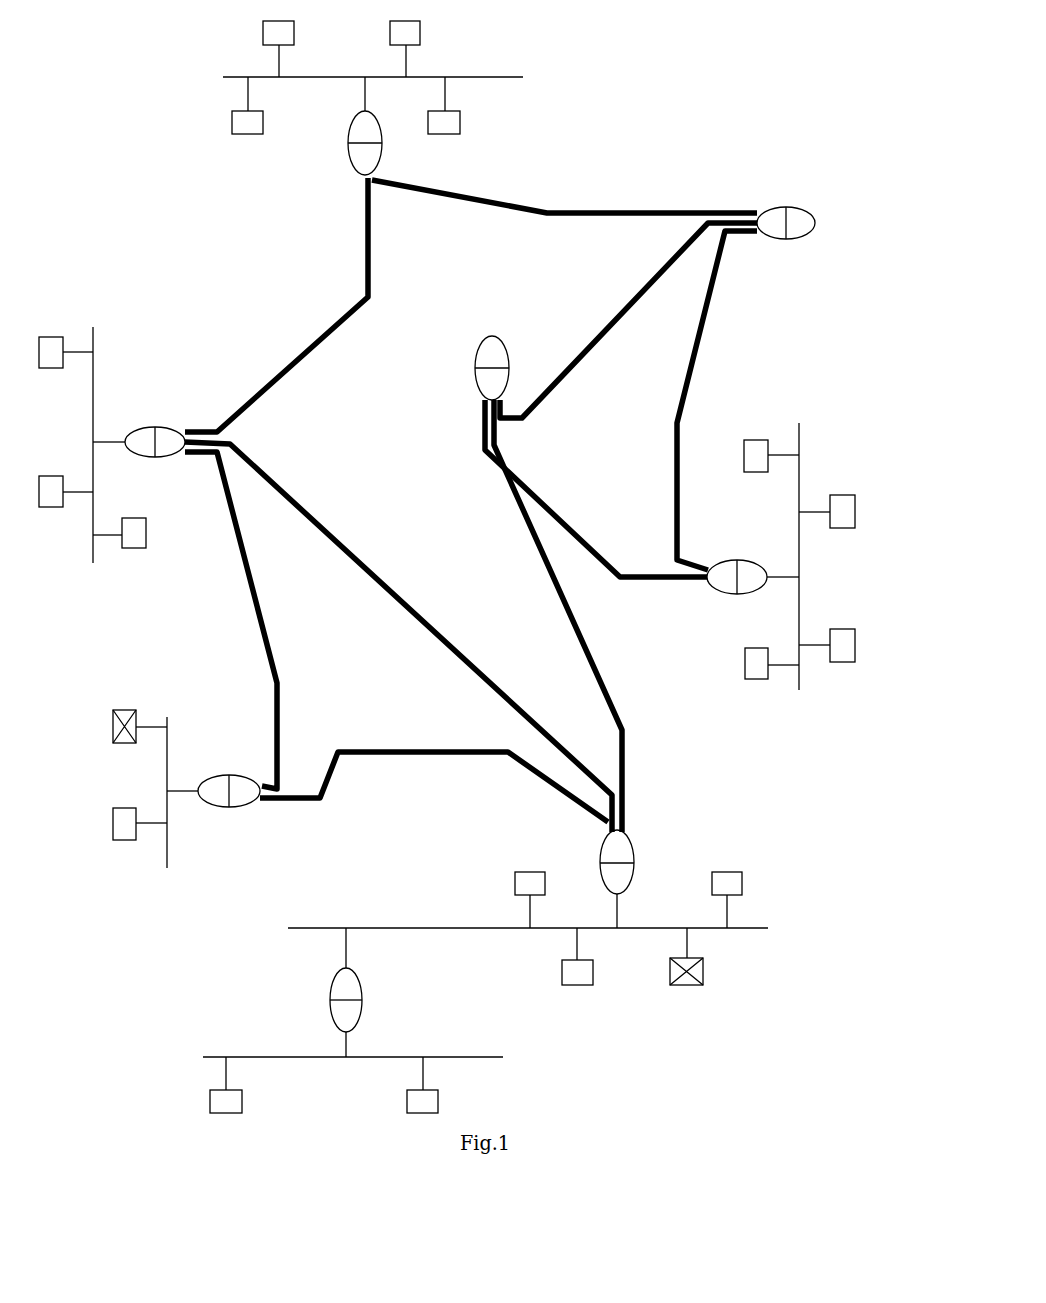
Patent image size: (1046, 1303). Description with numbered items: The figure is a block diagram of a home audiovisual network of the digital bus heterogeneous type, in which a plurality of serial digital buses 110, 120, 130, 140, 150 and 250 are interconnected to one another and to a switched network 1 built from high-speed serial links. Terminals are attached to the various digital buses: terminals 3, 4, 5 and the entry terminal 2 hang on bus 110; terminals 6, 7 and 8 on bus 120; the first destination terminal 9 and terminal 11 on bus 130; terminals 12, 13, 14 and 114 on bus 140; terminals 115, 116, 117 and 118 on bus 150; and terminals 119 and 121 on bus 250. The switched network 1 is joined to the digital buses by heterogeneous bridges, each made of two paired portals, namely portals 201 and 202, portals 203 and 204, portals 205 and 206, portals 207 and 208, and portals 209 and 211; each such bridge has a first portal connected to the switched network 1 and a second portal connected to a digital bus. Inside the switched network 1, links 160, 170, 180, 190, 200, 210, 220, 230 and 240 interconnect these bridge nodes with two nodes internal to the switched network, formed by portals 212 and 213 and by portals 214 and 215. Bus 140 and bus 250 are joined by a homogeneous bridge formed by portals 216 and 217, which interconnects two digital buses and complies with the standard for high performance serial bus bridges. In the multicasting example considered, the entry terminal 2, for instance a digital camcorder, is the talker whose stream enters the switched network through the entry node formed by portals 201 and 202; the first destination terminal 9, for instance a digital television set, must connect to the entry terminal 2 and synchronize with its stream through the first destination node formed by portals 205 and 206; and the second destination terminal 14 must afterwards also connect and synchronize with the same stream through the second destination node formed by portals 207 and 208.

The switched network 1 is at (639, 141).
The entry terminal 2 is at (232, 118).
The terminal 3 is at (262, 30).
The terminal 4 is at (421, 32).
The terminal 5 is at (461, 119).
The terminal 6 is at (49, 368).
The terminal 7 is at (49, 507).
The terminal 8 is at (133, 548).
The first destination terminal 9 is at (125, 743).
The terminal 11 is at (125, 840).
The terminal 12 is at (513, 878).
The terminal 13 is at (577, 985).
The second destination terminal 14 is at (687, 985).
The IEEE 1394 type bus 110 is at (503, 77).
The terminal 114 is at (743, 878).
The terminal 115 is at (755, 679).
The terminal 116 is at (840, 662).
The terminal 117 is at (843, 495).
The terminal 118 is at (752, 440).
The terminal 119 is at (209, 1097).
The IEEE 1394 type bus 120 is at (94, 331).
The terminal 121 is at (439, 1097).
The IEEE 1394 type bus 130 is at (168, 862).
The IEEE 1394 type bus 140 is at (472, 928).
The IEEE 1394 type bus 150 is at (800, 427).
The link 160 is at (370, 290).
The link 170 is at (546, 212).
The link 180 is at (318, 513).
The link 190 is at (345, 752).
The link 200 is at (259, 597).
The link 210 is at (575, 623).
The link 220 is at (530, 479).
The link 230 is at (677, 415).
The link 240 is at (600, 344).
The IEEE 1394 type bus 250 is at (503, 1056).
The portal 201 is at (350, 125).
The portal 202 is at (383, 148).
The portal 203 is at (165, 458).
The portal 204 is at (143, 427).
The portal 205 is at (213, 777).
The portal 206 is at (245, 807).
The portal 207 is at (598, 838).
The portal 208 is at (630, 880).
The portal 209 is at (730, 594).
The portal 211 is at (745, 560).
The internal node 212 is at (475, 350).
The internal node 213 is at (475, 380).
The internal node 214 is at (767, 207).
The internal node 215 is at (816, 220).
The homogeneous bridge portal 216 is at (330, 976).
The homogeneous bridge portal 217 is at (357, 1022).